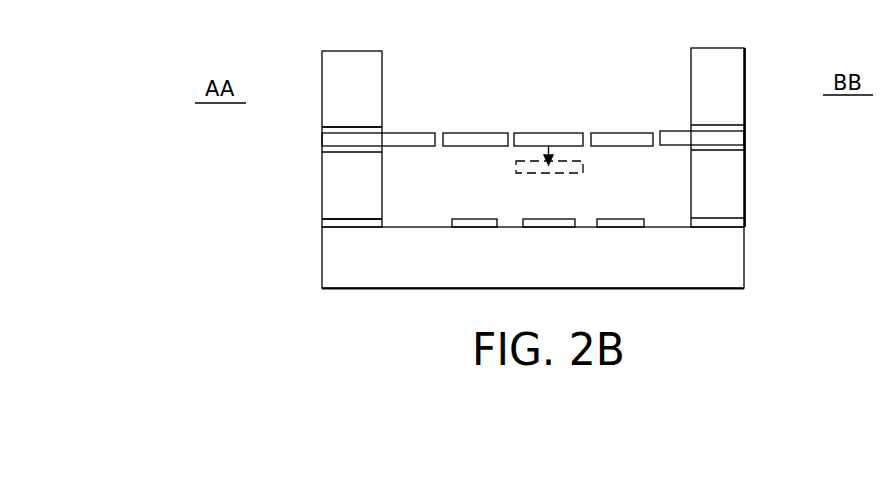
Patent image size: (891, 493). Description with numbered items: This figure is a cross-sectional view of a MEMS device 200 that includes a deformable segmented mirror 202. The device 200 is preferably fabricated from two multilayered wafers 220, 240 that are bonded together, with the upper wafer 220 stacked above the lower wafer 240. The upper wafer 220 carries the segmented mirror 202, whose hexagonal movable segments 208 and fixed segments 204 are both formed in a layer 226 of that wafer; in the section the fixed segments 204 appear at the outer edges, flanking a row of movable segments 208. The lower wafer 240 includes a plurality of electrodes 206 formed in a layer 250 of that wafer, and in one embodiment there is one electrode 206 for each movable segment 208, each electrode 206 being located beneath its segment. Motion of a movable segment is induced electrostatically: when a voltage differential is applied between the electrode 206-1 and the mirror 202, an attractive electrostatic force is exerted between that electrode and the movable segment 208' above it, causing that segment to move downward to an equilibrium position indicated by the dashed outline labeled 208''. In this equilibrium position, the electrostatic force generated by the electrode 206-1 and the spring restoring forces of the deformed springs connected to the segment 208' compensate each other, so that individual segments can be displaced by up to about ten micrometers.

The MEMS device 200 is at (270, 313).
The deformable segmented mirror 202 is at (470, 55).
The fixed segments 204 is at (402, 133).
The electrodes 206 is at (480, 228).
The electrode 206-1 is at (547, 228).
The movable segments 208 is at (548, 93).
The movable segment 208' is at (554, 110).
The equilibrium position of segment 208'' is at (556, 177).
The multilayered wafer 220 is at (763, 42).
The layer 226 is at (322, 137).
The multilayered wafer 240 is at (763, 218).
The layer 250 is at (322, 226).